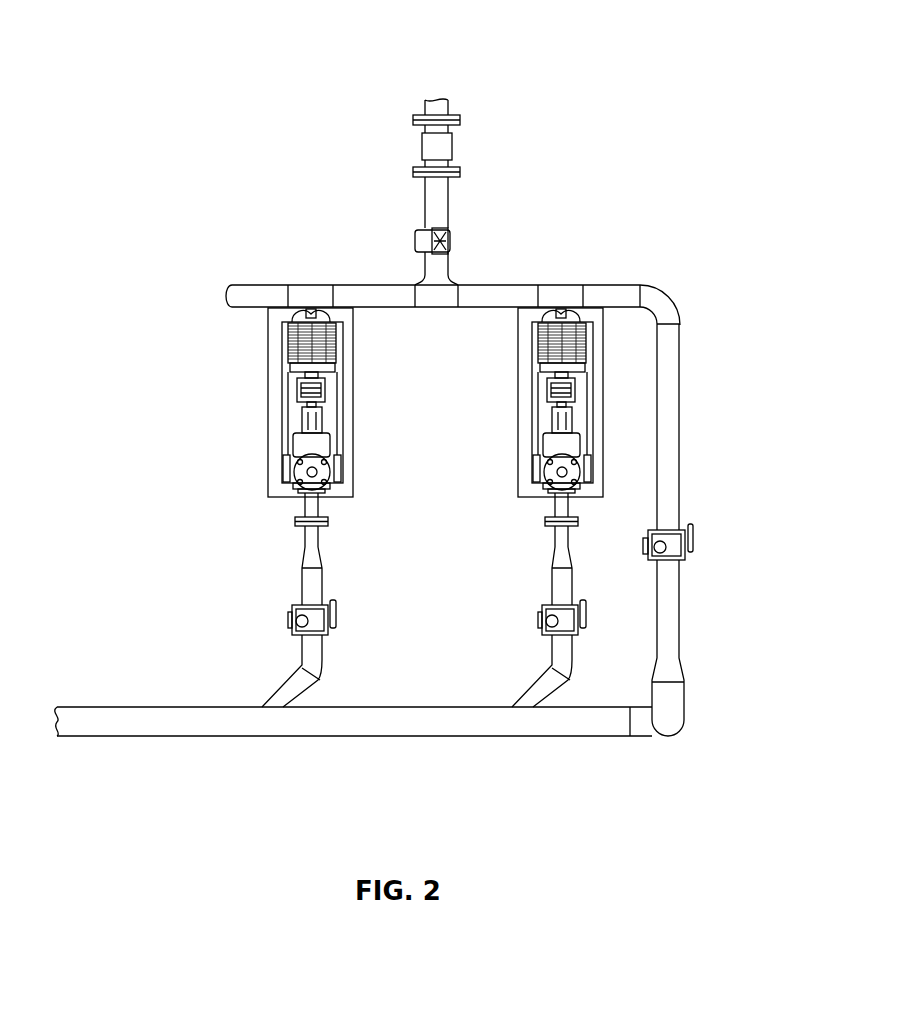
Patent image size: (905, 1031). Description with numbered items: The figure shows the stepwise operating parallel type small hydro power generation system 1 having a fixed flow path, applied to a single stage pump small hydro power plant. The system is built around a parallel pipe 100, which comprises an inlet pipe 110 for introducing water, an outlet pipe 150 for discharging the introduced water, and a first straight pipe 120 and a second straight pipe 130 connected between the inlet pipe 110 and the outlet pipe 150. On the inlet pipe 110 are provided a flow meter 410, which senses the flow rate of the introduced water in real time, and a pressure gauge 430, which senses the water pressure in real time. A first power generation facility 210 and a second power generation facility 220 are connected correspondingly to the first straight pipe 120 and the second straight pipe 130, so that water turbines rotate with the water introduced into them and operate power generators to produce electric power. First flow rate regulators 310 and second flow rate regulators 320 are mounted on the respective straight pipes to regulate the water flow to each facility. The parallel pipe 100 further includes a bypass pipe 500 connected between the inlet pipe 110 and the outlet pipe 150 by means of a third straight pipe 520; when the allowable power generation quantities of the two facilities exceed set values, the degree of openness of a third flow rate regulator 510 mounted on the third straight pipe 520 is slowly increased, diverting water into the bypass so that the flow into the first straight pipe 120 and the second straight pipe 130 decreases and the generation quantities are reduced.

The stepwise operating parallel type small hydro power generation system 1 is at (345, 100).
The parallel pipe 100 is at (298, 277).
The inlet pipe 110 is at (437, 202).
The first straight pipe 120 is at (305, 560).
The second straight pipe 130 is at (555, 560).
The outlet pipe 150 is at (165, 722).
The first power generation facility 210 is at (268, 404).
The second power generation facility 220 is at (518, 404).
The first flow rate regulator 310 is at (296, 625).
The second flow rate regulator 320 is at (546, 625).
The flow meter 410 is at (440, 146).
The pressure gauge 430 is at (443, 243).
The bypass pipe 500 is at (763, 460).
The third flow rate regulator 510 is at (665, 547).
The third straight pipe 520 is at (670, 487).